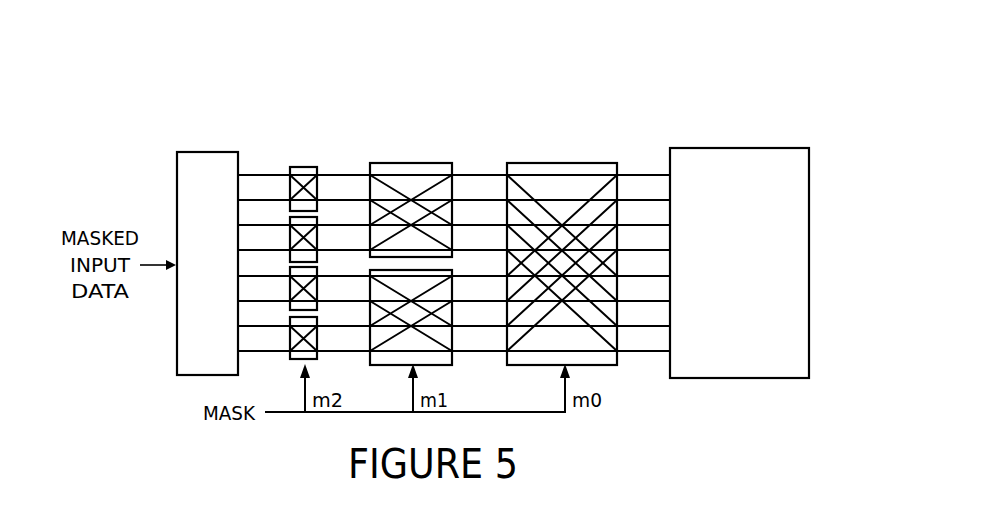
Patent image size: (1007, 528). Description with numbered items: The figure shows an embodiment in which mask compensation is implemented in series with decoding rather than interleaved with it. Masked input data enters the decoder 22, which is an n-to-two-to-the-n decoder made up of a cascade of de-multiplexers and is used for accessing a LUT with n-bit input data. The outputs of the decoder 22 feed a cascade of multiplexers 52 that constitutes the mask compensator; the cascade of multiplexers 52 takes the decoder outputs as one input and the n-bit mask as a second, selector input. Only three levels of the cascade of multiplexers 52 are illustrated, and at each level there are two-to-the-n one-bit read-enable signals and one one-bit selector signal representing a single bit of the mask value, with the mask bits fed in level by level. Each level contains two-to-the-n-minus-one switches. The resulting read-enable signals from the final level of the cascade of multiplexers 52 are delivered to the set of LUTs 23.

The decoder 22 is at (216, 240).
The set of LUTs 23 is at (733, 213).
The cascade of multiplexers 52 is at (298, 137).